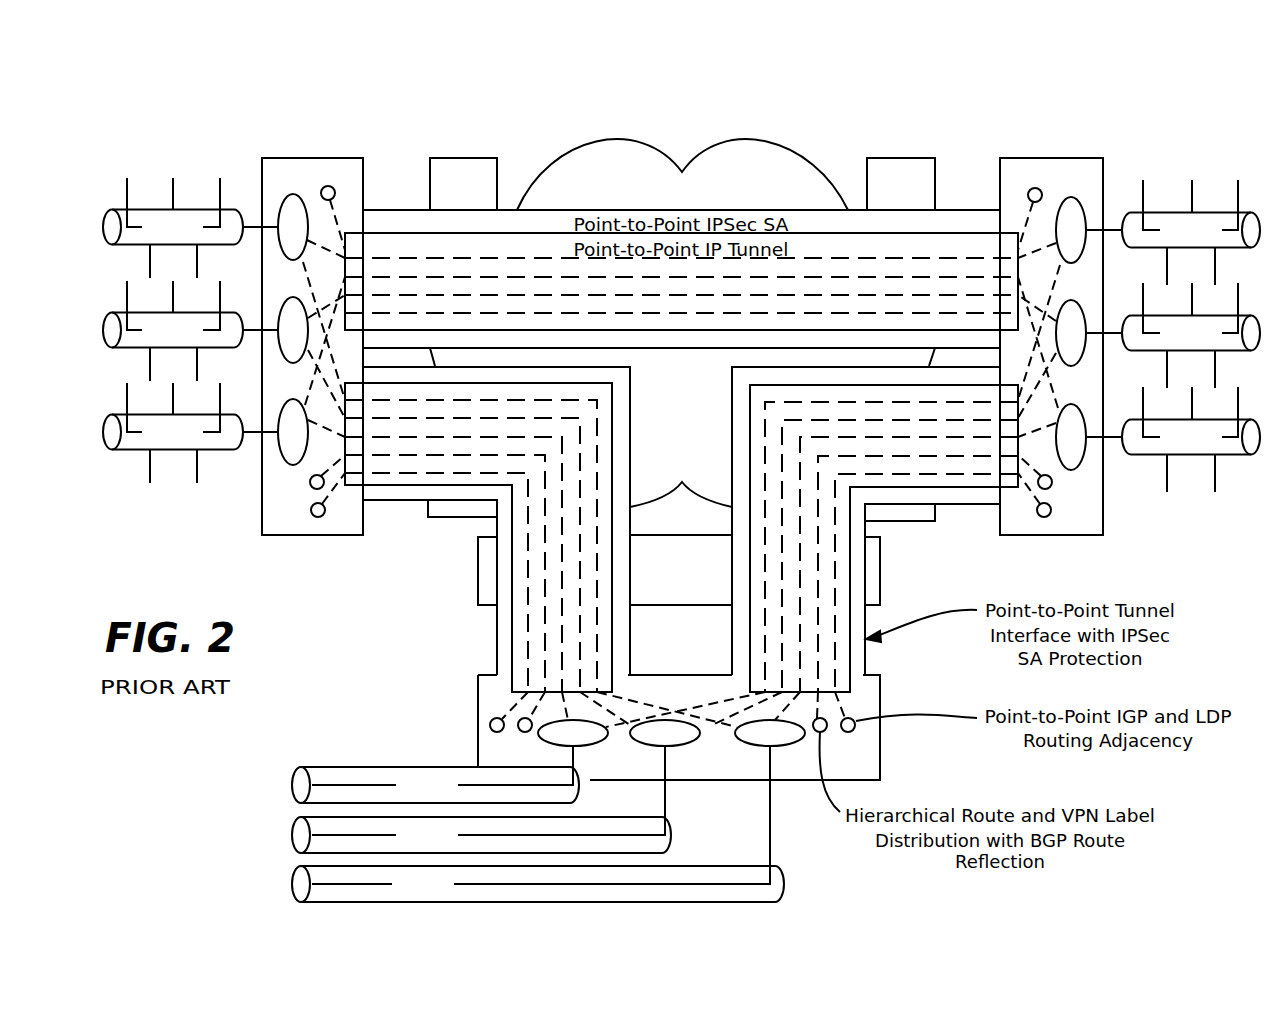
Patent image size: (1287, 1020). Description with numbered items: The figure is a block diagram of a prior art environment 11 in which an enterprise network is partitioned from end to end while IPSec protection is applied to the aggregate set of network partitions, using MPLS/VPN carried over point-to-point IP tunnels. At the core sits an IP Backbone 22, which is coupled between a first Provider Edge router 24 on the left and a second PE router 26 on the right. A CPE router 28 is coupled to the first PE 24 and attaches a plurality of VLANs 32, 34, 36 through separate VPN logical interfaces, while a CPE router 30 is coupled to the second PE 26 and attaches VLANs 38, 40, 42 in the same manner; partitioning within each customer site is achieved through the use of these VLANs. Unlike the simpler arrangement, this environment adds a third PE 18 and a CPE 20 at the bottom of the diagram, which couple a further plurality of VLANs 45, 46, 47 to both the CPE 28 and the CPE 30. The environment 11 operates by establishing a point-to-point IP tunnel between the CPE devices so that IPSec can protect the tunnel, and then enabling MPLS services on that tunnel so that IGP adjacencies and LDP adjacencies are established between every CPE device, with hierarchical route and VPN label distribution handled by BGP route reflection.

The prior art environment 11 is at (196, 122).
The third PE 18 is at (478, 549).
The CPE 20 is at (478, 691).
The IP Backbone 22 is at (682, 172).
The first Provider Edge (PE) router 24 is at (488, 158).
The second PE router 26 is at (925, 158).
The CPE router 28 is at (338, 158).
The CPE router 30 is at (1100, 158).
The VLAN 32 is at (118, 209).
The VLAN 34 is at (118, 312).
The VLAN 36 is at (118, 414).
The VLAN 38 is at (1245, 212).
The VLAN 40 is at (1245, 315).
The VLAN 42 is at (1245, 419).
The VLAN 45 is at (292, 785).
The VLAN 46 is at (292, 835).
The VLAN 47 is at (292, 884).